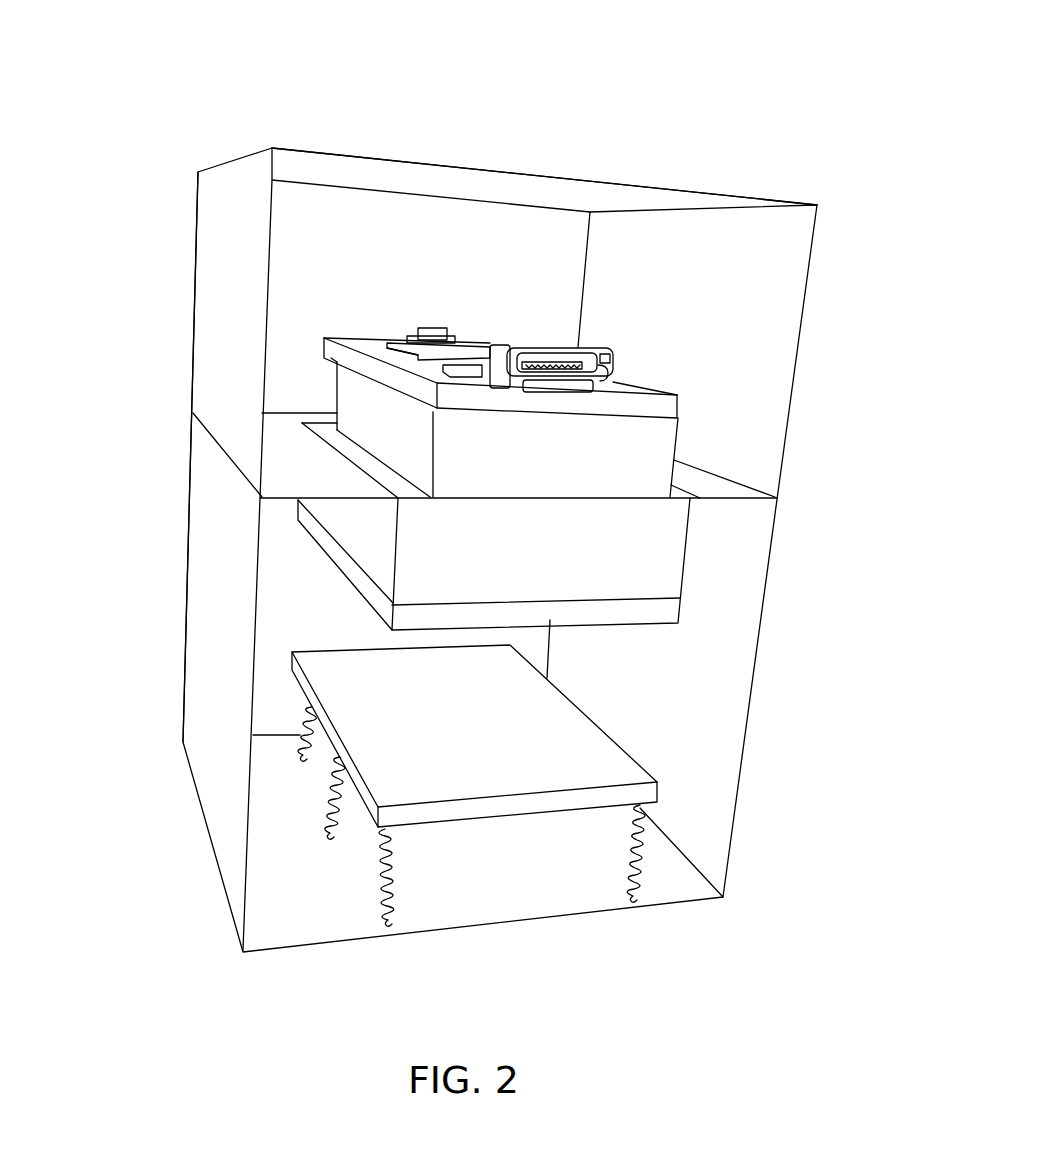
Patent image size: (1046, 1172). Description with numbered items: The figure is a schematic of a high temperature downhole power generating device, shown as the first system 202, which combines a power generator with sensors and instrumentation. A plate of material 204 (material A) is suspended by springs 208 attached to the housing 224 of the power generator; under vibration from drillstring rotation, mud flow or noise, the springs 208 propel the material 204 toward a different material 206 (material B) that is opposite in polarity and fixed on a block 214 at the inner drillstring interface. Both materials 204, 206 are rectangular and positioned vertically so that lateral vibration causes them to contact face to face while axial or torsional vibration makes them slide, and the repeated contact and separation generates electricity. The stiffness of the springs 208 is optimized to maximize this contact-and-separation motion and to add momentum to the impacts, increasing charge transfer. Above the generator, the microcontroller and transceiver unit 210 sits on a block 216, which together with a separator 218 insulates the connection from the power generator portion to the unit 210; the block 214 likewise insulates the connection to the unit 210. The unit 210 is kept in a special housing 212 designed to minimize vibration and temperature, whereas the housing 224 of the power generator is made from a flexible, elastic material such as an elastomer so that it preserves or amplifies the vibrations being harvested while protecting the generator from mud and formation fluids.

The first system 202 is at (692, 47).
The material 204 is at (378, 840).
The material 206 is at (372, 597).
The springs 208 is at (655, 840).
The microcontroller and transceiver unit (MTU) 210 is at (615, 408).
The housing 212 is at (347, 157).
The block 214 is at (685, 567).
The block 216 is at (353, 400).
The separator 218 is at (283, 473).
The housing 224 is at (185, 728).